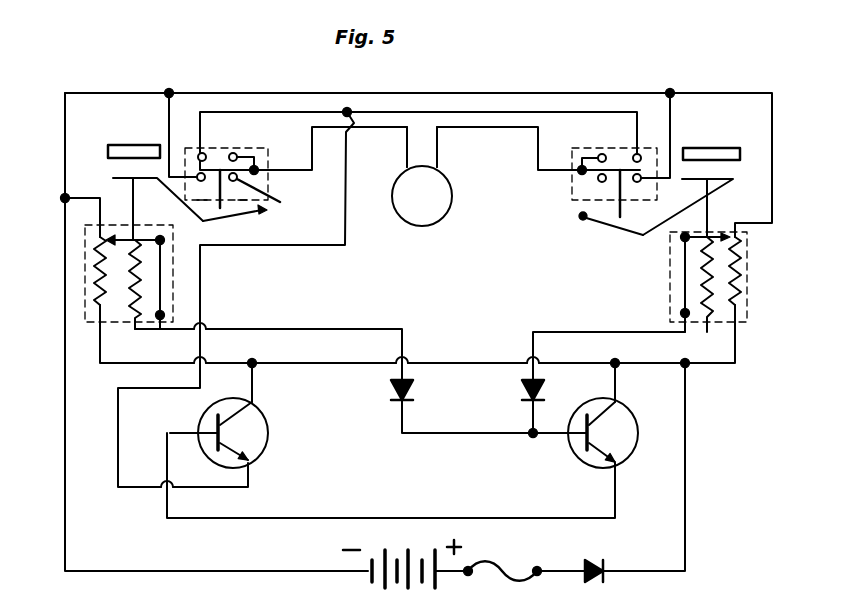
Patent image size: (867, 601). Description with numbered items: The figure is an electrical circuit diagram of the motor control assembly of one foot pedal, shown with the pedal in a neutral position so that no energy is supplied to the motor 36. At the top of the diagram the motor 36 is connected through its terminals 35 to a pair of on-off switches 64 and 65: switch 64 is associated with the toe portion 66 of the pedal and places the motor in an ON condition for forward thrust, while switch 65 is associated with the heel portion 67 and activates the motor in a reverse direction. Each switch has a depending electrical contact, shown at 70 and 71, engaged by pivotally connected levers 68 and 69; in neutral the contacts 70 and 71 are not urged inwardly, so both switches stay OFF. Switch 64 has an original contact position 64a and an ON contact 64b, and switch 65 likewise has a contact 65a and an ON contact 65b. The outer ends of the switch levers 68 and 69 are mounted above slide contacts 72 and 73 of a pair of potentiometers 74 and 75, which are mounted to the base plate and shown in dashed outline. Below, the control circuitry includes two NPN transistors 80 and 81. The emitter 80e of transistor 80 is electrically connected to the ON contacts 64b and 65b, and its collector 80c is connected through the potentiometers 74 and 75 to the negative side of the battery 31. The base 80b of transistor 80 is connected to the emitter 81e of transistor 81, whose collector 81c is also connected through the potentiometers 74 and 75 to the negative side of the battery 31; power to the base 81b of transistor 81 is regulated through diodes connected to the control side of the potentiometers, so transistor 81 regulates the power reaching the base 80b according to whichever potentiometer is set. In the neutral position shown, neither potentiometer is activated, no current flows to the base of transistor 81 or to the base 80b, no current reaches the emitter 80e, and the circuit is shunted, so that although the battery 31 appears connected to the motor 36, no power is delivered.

The battery 31 is at (393, 544).
The motor terminals 35 is at (400, 136).
The motor 36 is at (420, 226).
The on-off switch 64 is at (257, 169).
The original contact position 64a is at (268, 211).
The ON contact 64b is at (202, 153).
The on-off switch 65 is at (581, 175).
The movable contact of second switch 65a is at (597, 183).
The ON contact 65b is at (633, 153).
The toe portion 66 is at (128, 143).
The heel portion 67 is at (716, 147).
The lever 68 is at (215, 224).
The lever 69 is at (630, 236).
The depending electrical contact 70 is at (223, 185).
The depending electrical contact 71 is at (617, 206).
The slide contact 72 is at (122, 188).
The slide contact 73 is at (708, 204).
The potentiometer 74 is at (84, 286).
The potentiometer 75 is at (750, 259).
The NPN transistor 80 is at (243, 437).
The base 80b is at (207, 425).
The collector 80c is at (258, 414).
The emitter 80e is at (262, 460).
The NPN transistor 81 is at (589, 440).
The base 81b is at (580, 448).
The collector 81c is at (603, 408).
The emitter 81e is at (598, 466).